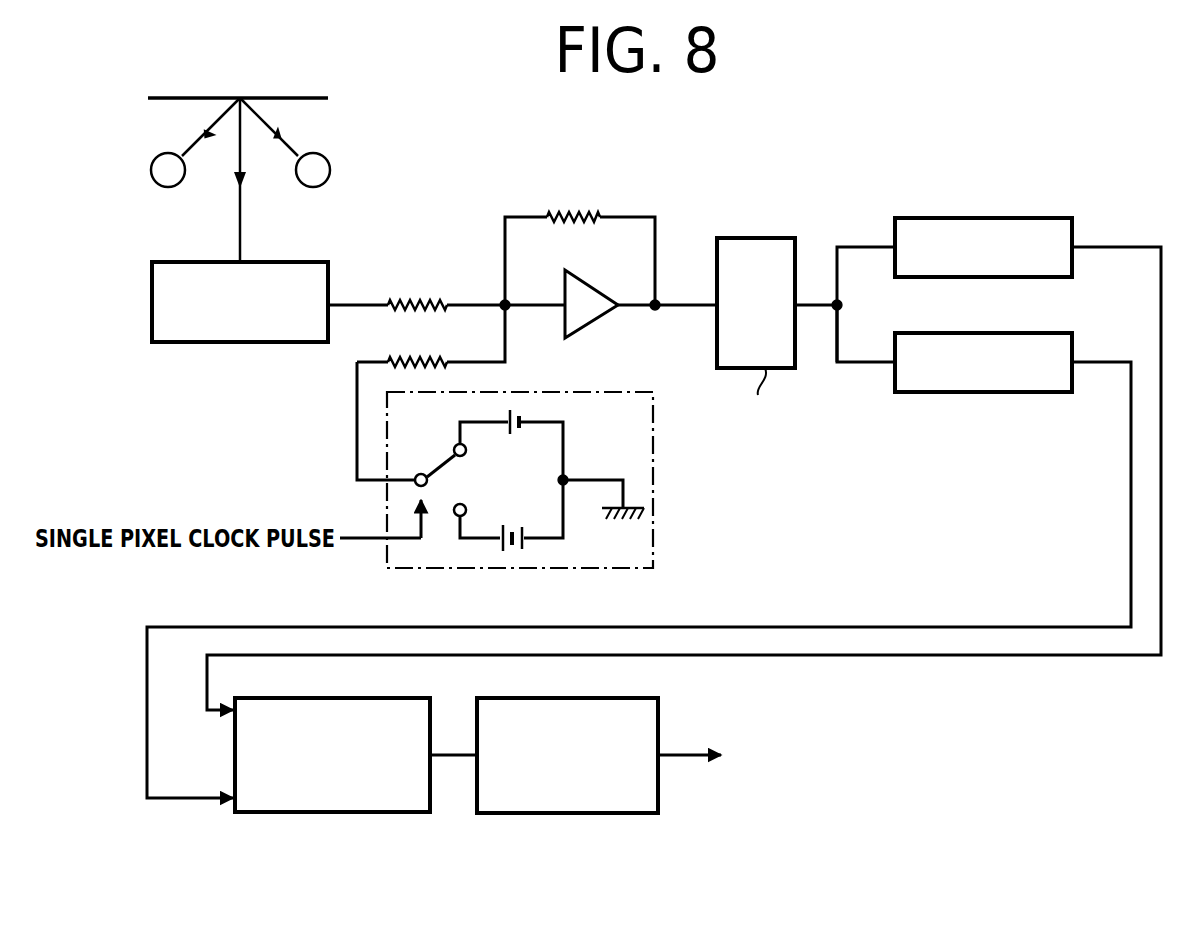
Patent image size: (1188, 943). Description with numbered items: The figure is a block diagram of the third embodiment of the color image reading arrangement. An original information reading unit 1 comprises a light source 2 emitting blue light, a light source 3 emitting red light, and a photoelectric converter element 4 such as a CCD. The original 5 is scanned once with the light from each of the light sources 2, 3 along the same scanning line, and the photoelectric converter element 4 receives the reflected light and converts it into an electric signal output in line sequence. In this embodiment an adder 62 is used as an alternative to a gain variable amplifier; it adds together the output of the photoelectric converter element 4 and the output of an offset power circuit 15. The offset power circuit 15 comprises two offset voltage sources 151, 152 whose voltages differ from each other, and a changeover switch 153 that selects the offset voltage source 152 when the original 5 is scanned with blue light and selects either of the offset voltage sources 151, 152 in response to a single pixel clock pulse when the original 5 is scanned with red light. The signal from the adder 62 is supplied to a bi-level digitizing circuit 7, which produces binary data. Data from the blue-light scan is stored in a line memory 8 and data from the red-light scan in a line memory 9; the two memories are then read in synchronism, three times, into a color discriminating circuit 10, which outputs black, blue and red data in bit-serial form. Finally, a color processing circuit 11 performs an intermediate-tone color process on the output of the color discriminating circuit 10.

The original information reading unit 1 is at (272, 114).
The light source 2 is at (160, 188).
The light source 3 is at (315, 188).
The photoelectric converter element 4 is at (200, 343).
The original 5 is at (288, 97).
The adder 62 is at (610, 253).
The bi-level digitizing circuit 7 is at (757, 238).
The line memory 8 is at (1015, 218).
The line memory 9 is at (1000, 333).
The color discriminating circuit 10 is at (393, 698).
The color processing circuit 11 is at (626, 698).
The offset power circuit 15 is at (527, 491).
The offset voltage source 151 is at (515, 560).
The offset voltage source 152 is at (517, 412).
The changeover switch 153 is at (440, 470).